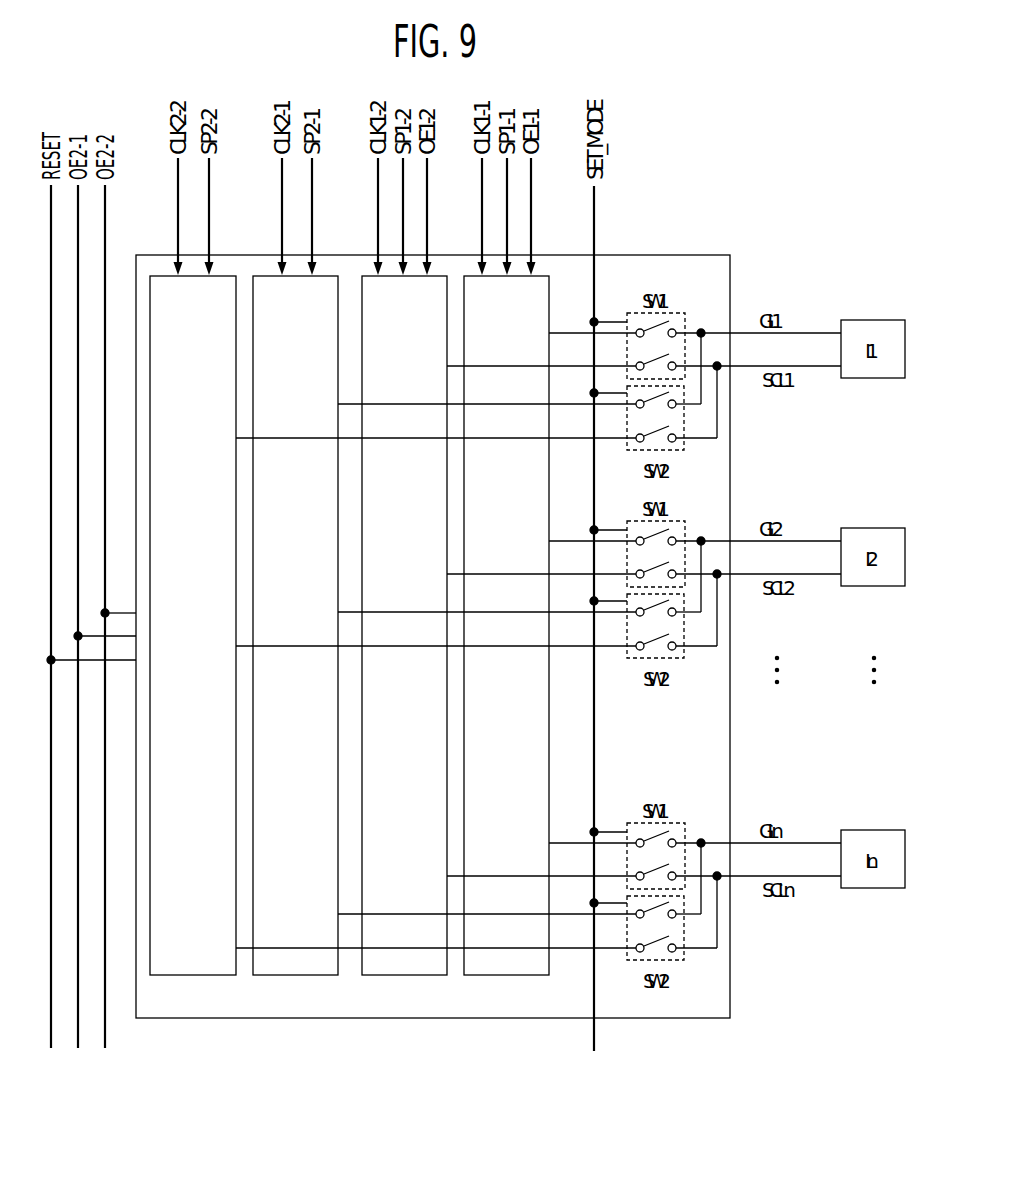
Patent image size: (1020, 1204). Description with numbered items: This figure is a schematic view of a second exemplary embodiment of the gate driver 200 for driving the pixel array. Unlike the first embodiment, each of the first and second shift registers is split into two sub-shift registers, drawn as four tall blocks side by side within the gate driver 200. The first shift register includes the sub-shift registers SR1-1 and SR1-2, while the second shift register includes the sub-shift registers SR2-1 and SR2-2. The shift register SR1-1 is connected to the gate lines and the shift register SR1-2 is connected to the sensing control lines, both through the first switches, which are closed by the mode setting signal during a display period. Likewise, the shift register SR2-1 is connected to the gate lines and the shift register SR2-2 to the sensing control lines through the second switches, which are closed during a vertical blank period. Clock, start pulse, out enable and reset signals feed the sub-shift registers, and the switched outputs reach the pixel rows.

The gate driver 200 is at (680, 255).
The 2-2 shift register SR2-2 is at (222, 276).
The 2-1 shift register SR2-1 is at (327, 276).
The 1-2 shift register SR1-2 is at (435, 276).
The 1-1 shift register SR1-1 is at (538, 276).